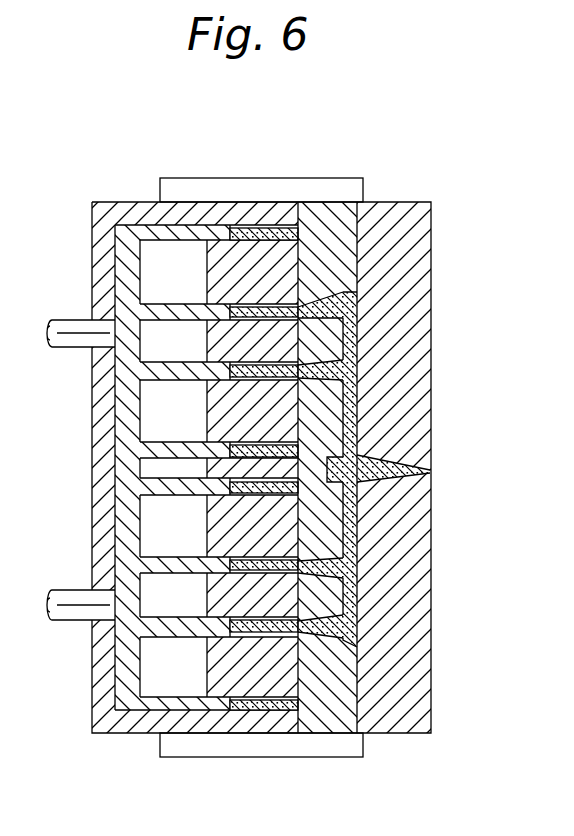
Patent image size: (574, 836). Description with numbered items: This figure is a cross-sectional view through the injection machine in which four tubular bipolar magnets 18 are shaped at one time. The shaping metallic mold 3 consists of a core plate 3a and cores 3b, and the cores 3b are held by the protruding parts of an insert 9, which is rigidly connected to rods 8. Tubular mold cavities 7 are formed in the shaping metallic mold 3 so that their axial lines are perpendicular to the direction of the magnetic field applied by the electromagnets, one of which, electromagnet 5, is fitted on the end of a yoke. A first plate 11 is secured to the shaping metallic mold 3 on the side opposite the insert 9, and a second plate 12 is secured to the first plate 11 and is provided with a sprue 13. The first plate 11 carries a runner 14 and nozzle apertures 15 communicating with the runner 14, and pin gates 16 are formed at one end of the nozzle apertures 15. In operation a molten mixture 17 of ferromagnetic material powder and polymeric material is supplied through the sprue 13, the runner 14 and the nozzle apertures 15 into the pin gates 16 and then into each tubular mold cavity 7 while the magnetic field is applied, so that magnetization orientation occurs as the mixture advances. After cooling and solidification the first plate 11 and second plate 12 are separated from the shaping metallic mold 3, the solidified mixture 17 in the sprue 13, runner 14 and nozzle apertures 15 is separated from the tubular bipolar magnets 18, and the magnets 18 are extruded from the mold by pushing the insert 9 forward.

The shaping metallic mold 3 is at (97, 753).
The core plate 3a is at (92, 709).
The cores 3b is at (213, 690).
The electromagnet 5 is at (160, 194).
The tubular mold cavity 7 is at (249, 321).
The rods 8 is at (72, 620).
The insert 9 is at (180, 497).
The first plate 11 is at (330, 733).
The second plate 12 is at (398, 725).
The sprue 13 is at (432, 472).
The runner 14 is at (358, 530).
The nozzle apertures 15 is at (355, 628).
The pin gates 16 is at (306, 305).
The mixture 17 is at (432, 473).
The tubular bipolar magnets 18 is at (246, 445).